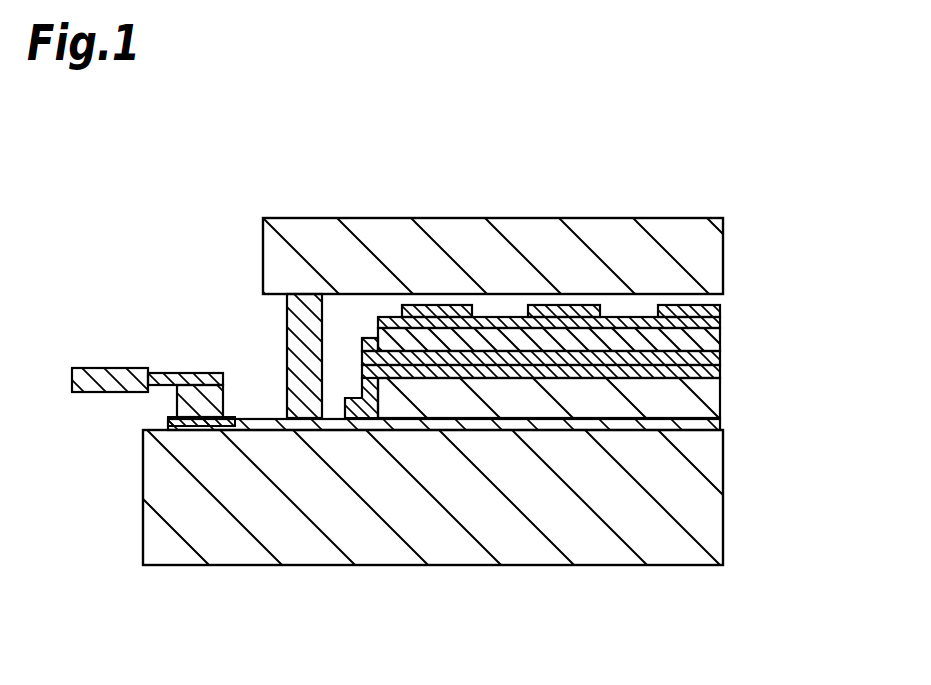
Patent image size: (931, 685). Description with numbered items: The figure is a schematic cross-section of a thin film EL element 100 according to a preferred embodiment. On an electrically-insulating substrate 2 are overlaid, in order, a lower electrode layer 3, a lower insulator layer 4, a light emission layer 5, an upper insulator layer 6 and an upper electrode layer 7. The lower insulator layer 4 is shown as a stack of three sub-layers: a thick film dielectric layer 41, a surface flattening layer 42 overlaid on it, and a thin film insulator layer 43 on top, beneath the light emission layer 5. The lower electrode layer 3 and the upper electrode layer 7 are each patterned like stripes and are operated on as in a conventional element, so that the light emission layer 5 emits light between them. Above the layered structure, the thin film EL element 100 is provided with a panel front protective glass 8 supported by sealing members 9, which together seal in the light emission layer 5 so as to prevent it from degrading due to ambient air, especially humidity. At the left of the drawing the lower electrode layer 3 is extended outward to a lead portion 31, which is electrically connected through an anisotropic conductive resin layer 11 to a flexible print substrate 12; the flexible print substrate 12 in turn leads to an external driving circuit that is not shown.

The thin film EL element 100 is at (644, 139).
The electrically-insulating substrate 2 is at (717, 475).
The lower electrode layer 3 is at (720, 423).
The lead portion 31 is at (167, 425).
The lower insulator layer 4 is at (607, 382).
The thick film dielectric layer 41 is at (717, 400).
The surface flattening layer 42 is at (717, 373).
The thin film insulator layer 43 is at (717, 353).
The light emission layer 5 is at (717, 342).
The upper insulator layer 6 is at (718, 320).
The upper electrode layer 7 is at (720, 310).
The panel front protective glass 8 is at (263, 262).
The sealing member 9 is at (287, 320).
The anisotropic conductive resin layer 11 is at (228, 401).
The flexible print substrate 12 is at (104, 368).